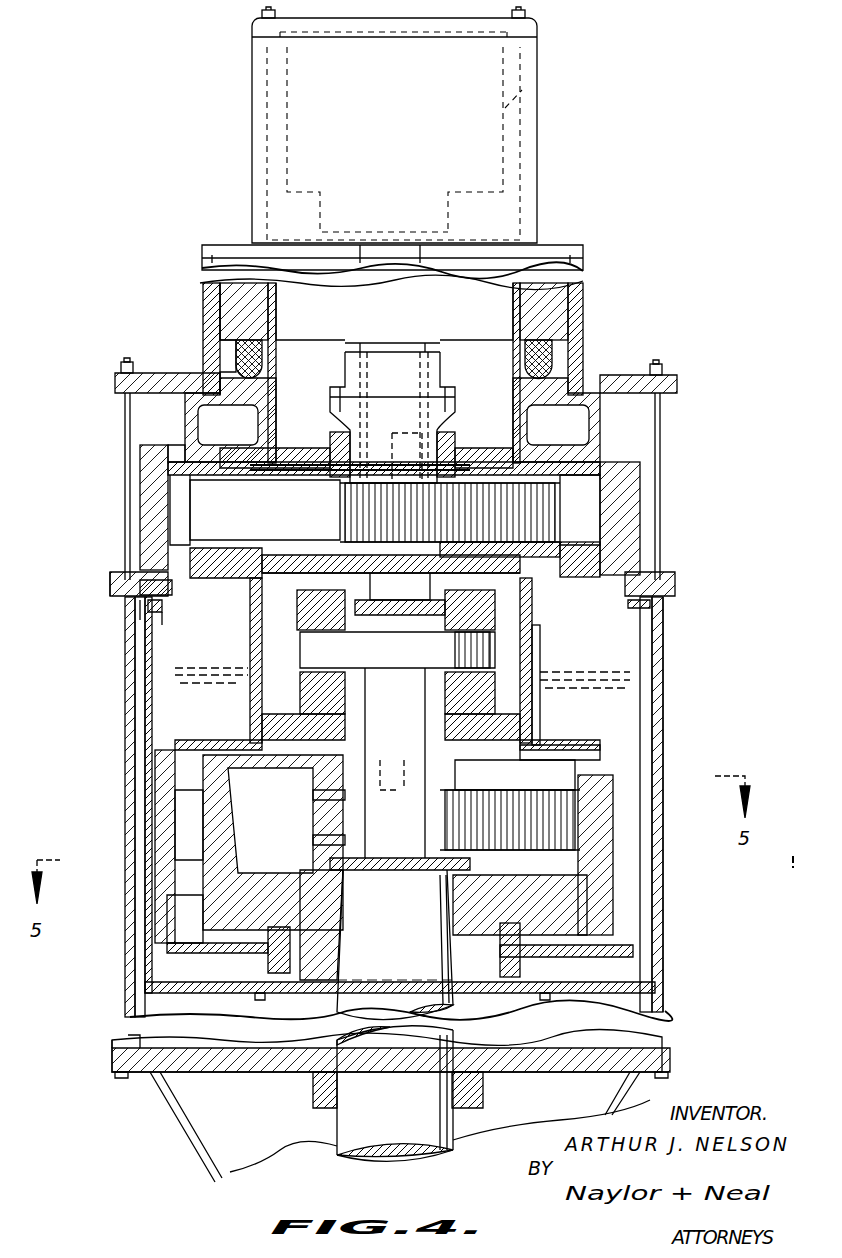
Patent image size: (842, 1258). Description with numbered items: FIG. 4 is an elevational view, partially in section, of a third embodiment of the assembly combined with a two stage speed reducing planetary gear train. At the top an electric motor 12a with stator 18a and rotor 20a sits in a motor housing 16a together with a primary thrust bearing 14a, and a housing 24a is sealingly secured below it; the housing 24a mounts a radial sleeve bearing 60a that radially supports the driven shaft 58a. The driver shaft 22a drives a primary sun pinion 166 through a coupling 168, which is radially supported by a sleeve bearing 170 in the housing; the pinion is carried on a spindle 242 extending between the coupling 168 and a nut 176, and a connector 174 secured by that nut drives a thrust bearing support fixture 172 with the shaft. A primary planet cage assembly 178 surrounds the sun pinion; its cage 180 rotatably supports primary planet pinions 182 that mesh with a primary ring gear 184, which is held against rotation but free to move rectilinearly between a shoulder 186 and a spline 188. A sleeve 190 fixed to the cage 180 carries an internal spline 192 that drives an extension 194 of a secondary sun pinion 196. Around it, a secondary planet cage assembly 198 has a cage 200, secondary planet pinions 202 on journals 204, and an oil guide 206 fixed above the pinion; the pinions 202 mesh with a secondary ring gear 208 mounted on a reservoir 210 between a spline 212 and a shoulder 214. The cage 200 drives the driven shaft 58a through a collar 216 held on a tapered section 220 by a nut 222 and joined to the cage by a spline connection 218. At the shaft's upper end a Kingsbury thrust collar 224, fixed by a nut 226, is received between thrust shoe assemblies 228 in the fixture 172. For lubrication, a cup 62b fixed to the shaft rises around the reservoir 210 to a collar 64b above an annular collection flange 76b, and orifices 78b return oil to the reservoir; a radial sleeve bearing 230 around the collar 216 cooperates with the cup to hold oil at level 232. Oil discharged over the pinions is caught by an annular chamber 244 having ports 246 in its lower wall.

The primary thrust bearing 14a is at (540, 80).
The electric motor 12a is at (202, 312).
The motor housing 16a is at (586, 305).
The rotor 20a is at (394, 311).
The driver shaft 22a is at (352, 338).
The stator 18a is at (555, 362).
The coupling 168 is at (456, 400).
The sleeve bearing 170 is at (335, 438).
The spline 188 is at (168, 470).
The primary planet cage assembly 178 is at (572, 470).
The housing 24a is at (140, 522).
The primary ring gear 184 is at (618, 522).
The primary sun pinion 166 is at (345, 510).
The shoulder 186 is at (168, 560).
The thrust bearing support fixture 172 is at (295, 560).
The nut 176 is at (372, 590).
The spindle 242 is at (330, 563).
The connector 174 is at (440, 562).
The cage 180 is at (248, 590).
The sleeve 190 is at (250, 612).
The orifices 78b is at (170, 606).
The annular collection flange 76b is at (150, 612).
The thrust shoe assemblies 228 is at (495, 605).
The primary planet pinions 182 is at (580, 548).
The collar 64b is at (650, 608).
The oil level 232 is at (208, 665).
The annular chamber 244 is at (542, 650).
The Kingsbury thrust collar 224 is at (397, 650).
The nut 226 is at (410, 640).
The internal spline 192 is at (532, 708).
The ports 246 is at (240, 744).
The journals 204 is at (605, 740).
The secondary planet cage assembly 198 is at (580, 762).
The extension 194 is at (297, 740).
The oil guide 206 is at (320, 800).
The shoulder 214 is at (180, 812).
The secondary sun pinion 196 is at (318, 830).
The secondary planet pinions 202 is at (425, 827).
The secondary ring gear 208 is at (614, 840).
The spline 212 is at (190, 875).
The nut 222 is at (350, 880).
The tapered section 220 is at (395, 945).
The cage 200 is at (210, 918).
The reservoir 210 is at (160, 920).
The spline connection 218 is at (222, 930).
The collar 216 is at (325, 960).
The radial sleeve bearing 230 is at (520, 963).
The cup 62b is at (665, 962).
The radial sleeve bearing 60a is at (470, 1090).
The driven shaft 58a is at (440, 1158).